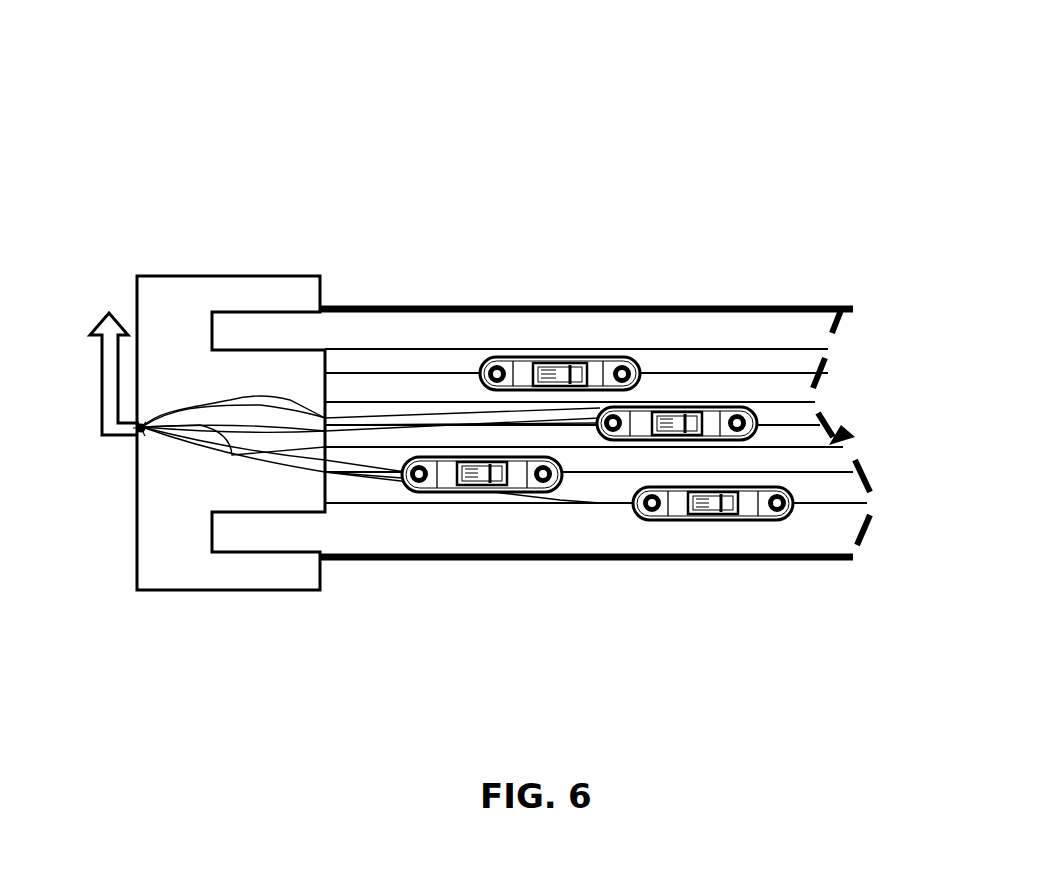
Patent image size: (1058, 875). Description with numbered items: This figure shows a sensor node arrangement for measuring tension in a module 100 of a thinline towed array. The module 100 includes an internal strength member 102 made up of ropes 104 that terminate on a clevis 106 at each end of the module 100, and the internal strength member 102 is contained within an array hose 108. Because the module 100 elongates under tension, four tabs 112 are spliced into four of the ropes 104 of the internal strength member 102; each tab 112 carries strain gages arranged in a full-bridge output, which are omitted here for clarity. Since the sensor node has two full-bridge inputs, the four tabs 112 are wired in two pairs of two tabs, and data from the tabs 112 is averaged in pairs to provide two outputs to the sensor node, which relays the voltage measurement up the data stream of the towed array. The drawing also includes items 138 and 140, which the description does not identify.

The module 100 is at (170, 85).
The internal strength member 102 is at (856, 438).
The ropes 104 is at (407, 423).
The clevis 106 is at (253, 378).
The array hose 108 is at (485, 562).
The tabs 112 is at (677, 407).
The light emission point / beams 138 is at (140, 437).
The direction arrow 140 is at (100, 385).